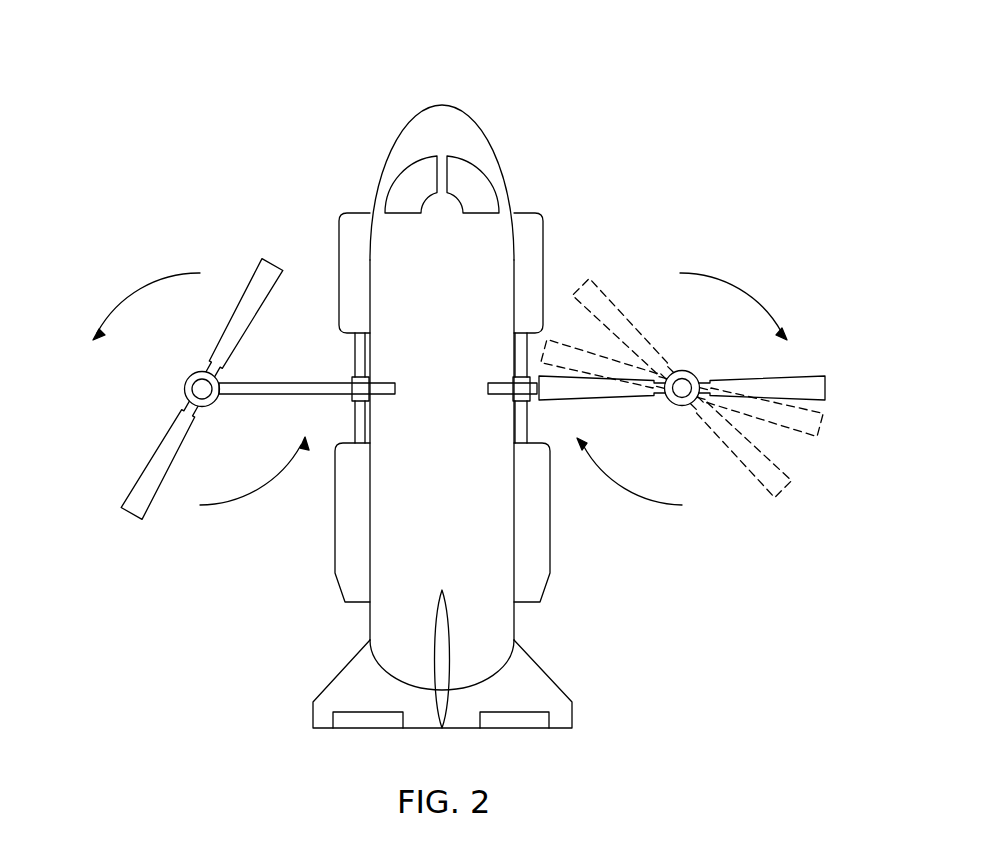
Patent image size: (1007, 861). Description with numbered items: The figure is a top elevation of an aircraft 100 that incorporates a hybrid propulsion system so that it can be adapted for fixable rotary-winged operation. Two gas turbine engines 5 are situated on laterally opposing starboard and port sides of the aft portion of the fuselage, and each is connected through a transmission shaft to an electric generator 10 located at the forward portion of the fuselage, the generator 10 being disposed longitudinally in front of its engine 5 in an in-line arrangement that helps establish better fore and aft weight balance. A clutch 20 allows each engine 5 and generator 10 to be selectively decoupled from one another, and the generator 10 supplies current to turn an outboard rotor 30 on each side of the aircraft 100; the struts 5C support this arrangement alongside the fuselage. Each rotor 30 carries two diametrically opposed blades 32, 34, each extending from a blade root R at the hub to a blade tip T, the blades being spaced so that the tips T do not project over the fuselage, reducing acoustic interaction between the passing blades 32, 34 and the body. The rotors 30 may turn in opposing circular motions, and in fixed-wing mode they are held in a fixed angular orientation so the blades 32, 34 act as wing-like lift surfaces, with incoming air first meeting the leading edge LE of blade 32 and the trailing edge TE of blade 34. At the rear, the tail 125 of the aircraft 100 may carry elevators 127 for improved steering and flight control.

The aircraft 100 is at (563, 100).
The electric generator 10 is at (540, 249).
The gas turbine engine 5 is at (545, 520).
The strut 5C is at (522, 430).
The clutch 20 is at (523, 403).
The rotor 30 is at (196, 381).
The first blade 32 is at (253, 307).
The second blade 34 is at (142, 502).
The blade tip T is at (278, 258).
The leading edge LE is at (253, 277).
The trailing edge TE is at (277, 285).
The blade root R is at (222, 367).
The tail 125 is at (343, 682).
The elevators 127 is at (510, 722).